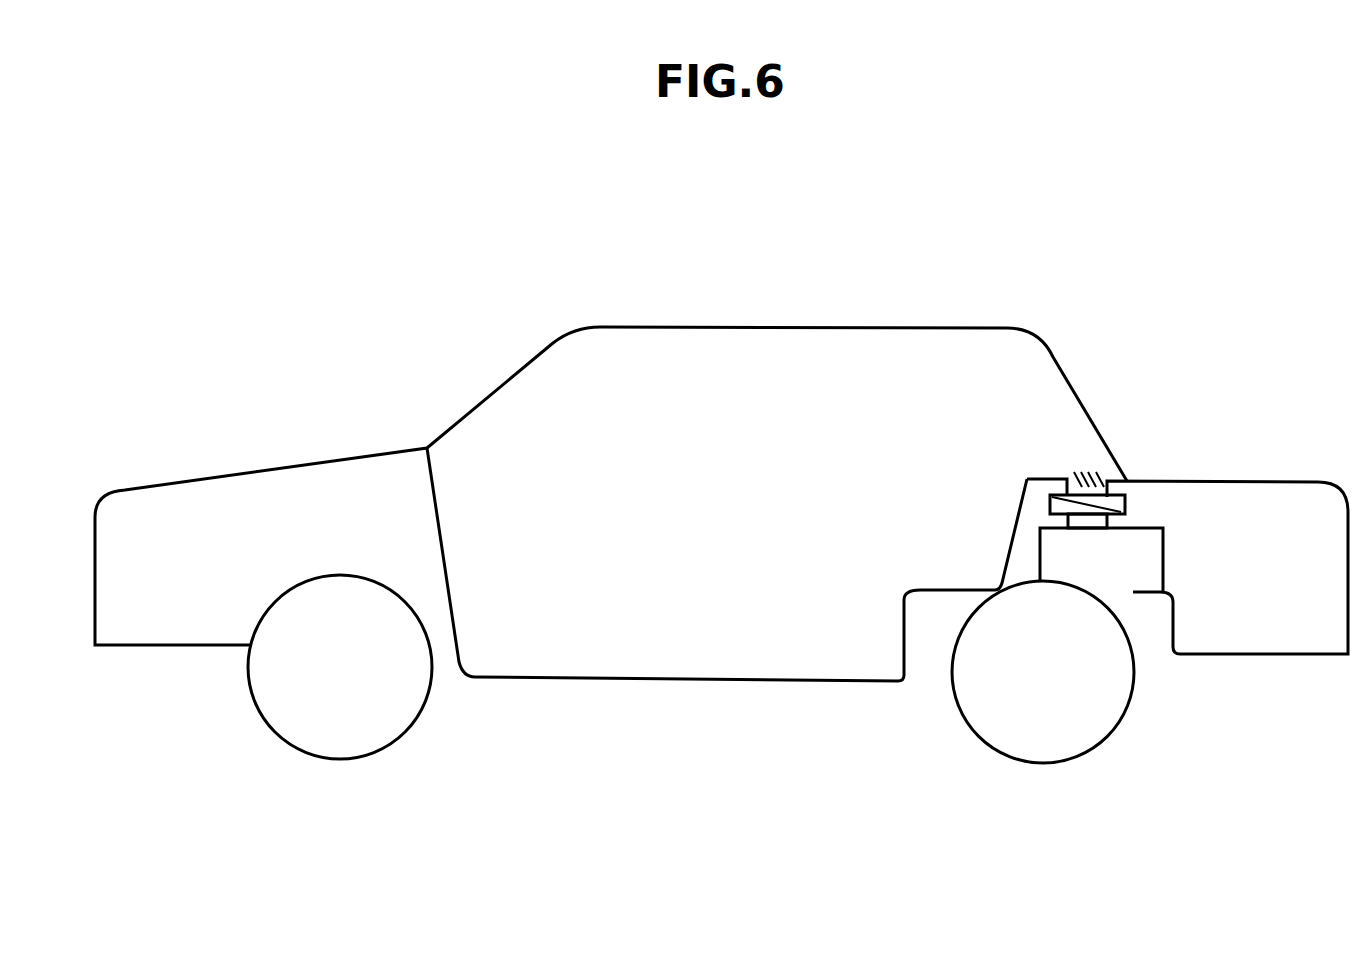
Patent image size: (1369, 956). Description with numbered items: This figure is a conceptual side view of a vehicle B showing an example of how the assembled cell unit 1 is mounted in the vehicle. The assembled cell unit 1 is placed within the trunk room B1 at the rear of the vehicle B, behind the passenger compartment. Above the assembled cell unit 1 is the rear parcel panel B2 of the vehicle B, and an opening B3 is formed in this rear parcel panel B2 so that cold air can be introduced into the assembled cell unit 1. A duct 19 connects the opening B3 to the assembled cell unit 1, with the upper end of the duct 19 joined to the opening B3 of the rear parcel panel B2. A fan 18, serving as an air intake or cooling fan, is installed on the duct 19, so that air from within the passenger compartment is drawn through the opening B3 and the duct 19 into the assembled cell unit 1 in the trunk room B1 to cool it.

The vehicle B is at (888, 298).
The trunk room B1 is at (1245, 513).
The rear parcel panel B2 is at (1040, 479).
The opening B3 is at (1090, 470).
The fan 18 is at (1048, 502).
The duct 19 is at (1067, 520).
The assembled cell unit 1 is at (1180, 562).